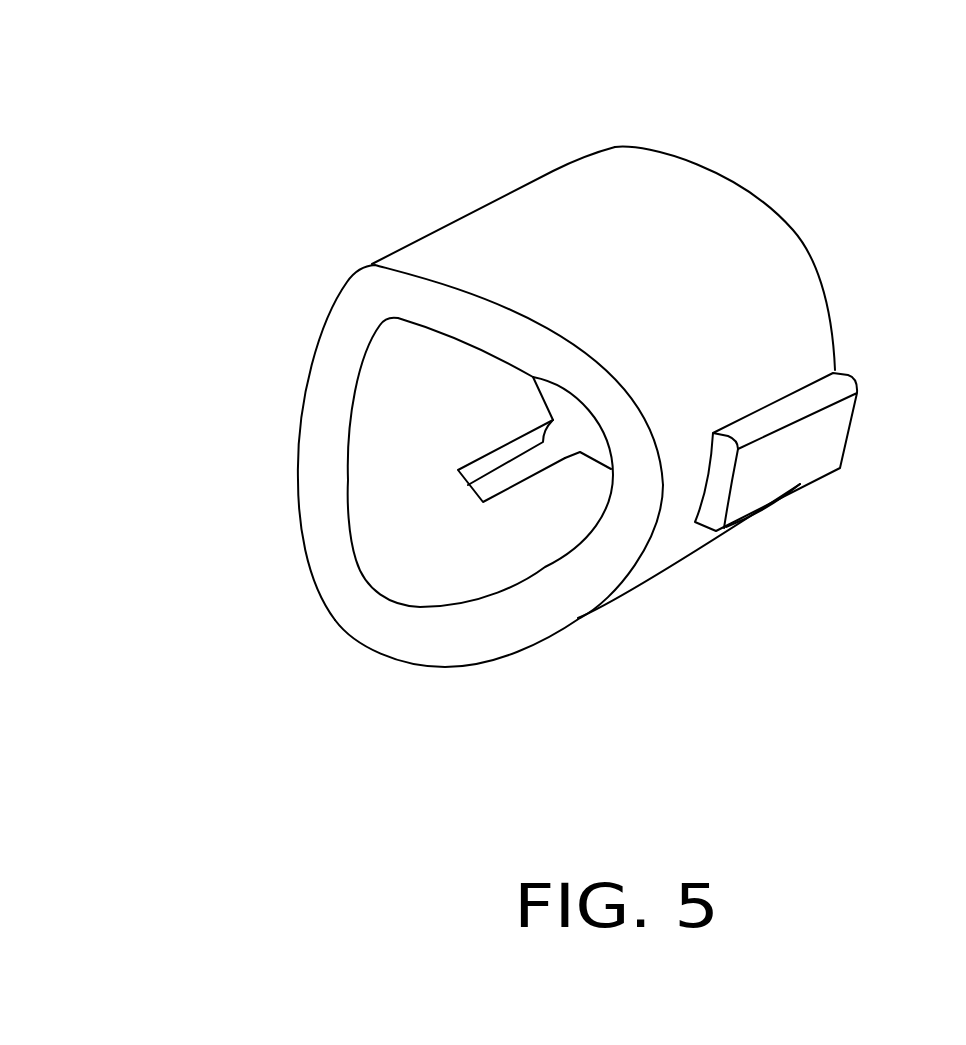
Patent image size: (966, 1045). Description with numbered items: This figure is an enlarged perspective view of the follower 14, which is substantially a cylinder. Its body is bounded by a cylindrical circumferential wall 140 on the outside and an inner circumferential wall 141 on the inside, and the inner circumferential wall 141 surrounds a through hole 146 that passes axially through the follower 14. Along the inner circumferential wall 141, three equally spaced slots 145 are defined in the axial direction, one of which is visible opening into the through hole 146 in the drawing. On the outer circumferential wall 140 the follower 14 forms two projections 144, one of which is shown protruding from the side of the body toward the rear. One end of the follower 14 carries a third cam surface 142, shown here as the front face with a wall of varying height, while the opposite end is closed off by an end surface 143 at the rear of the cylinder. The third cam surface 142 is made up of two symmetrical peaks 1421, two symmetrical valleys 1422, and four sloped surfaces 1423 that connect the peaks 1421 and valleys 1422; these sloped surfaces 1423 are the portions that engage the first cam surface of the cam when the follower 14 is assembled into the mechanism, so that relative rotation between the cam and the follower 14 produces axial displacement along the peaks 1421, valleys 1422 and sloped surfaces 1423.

The follower 14 is at (618, 57).
The cylindrical circumferential wall 140 is at (530, 242).
The inner circumferential wall 141 is at (463, 558).
The third cam surface 142 is at (363, 466).
The peaks 1421 is at (383, 622).
The valleys 1422 is at (340, 393).
The sloped surfaces 1423 is at (323, 513).
The end surface 143 is at (800, 218).
The projections 144 is at (817, 450).
The slots 145 is at (503, 477).
The through hole 146 is at (600, 450).